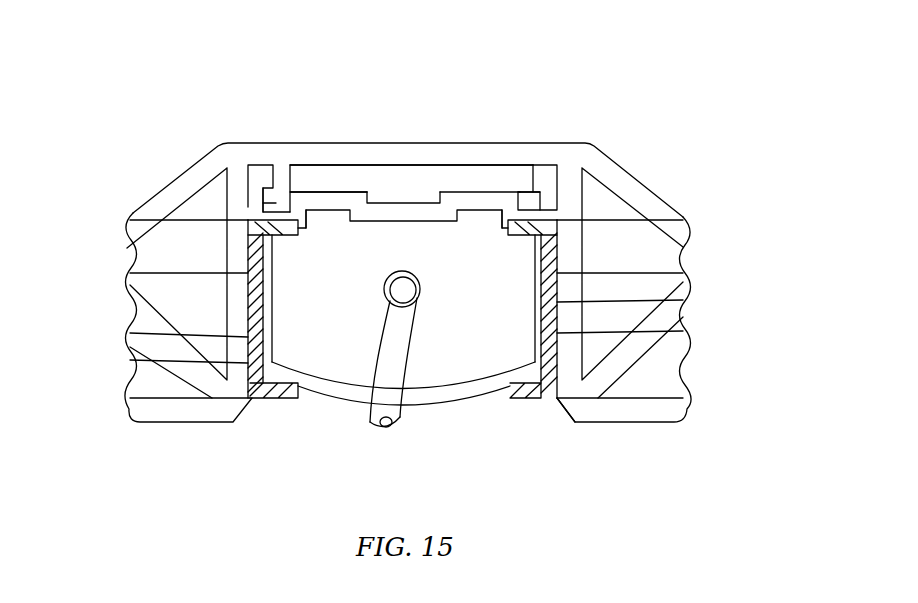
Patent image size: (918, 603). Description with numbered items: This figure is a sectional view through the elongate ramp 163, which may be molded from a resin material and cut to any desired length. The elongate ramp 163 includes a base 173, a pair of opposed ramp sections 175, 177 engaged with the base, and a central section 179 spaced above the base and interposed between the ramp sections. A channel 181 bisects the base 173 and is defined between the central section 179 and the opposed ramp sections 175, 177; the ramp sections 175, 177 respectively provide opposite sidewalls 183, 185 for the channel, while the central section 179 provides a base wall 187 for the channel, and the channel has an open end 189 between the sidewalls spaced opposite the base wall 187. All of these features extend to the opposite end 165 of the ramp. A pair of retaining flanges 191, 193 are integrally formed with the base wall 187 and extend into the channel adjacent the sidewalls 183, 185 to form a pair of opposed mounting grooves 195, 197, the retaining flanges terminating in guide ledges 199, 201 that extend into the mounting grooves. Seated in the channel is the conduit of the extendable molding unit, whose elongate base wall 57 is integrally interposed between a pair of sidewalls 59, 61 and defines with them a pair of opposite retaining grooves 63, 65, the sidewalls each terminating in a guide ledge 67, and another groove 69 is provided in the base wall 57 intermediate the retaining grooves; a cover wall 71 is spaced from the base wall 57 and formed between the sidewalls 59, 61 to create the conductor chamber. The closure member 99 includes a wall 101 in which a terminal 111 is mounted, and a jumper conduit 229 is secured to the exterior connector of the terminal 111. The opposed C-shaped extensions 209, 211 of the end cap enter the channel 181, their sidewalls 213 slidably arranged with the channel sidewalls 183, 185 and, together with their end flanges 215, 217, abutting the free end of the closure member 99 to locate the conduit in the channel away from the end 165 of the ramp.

The elongate ramp 163 is at (674, 60).
The opposite end 165 is at (574, 152).
The ramp section 175 is at (187, 167).
The ramp section 177 is at (636, 180).
The base 173 is at (180, 425).
The open end 189 is at (563, 413).
The guide ledge 67 is at (248, 213).
The end flange 215 is at (130, 220).
The sidewall 183 is at (130, 273).
The sidewall 185 is at (686, 273).
The sidewall 213 is at (130, 333).
The C-shaped extension 209 is at (130, 361).
The C-shaped extension 211 is at (686, 331).
The closure member 99 is at (340, 440).
The cover wall 71 is at (430, 408).
The end flange 217 is at (275, 400).
The sidewall 59 is at (273, 323).
The sidewall 61 is at (535, 323).
The wall 101 is at (328, 356).
The base wall 57 is at (396, 226).
The retaining groove 63 is at (328, 211).
The retaining groove 65 is at (480, 211).
The groove 69 is at (407, 204).
The central section 179 is at (373, 164).
The base wall 187 is at (340, 164).
The channel 181 is at (414, 184).
The retaining flange 191 is at (283, 172).
The mounting groove 195 is at (265, 172).
The guide ledge 199 is at (252, 193).
The mounting groove 197 is at (538, 164).
The retaining flange 193 is at (528, 170).
The guide ledge 201 is at (520, 192).
The terminal 111 is at (424, 294).
The jumper conduit 229 is at (387, 426).